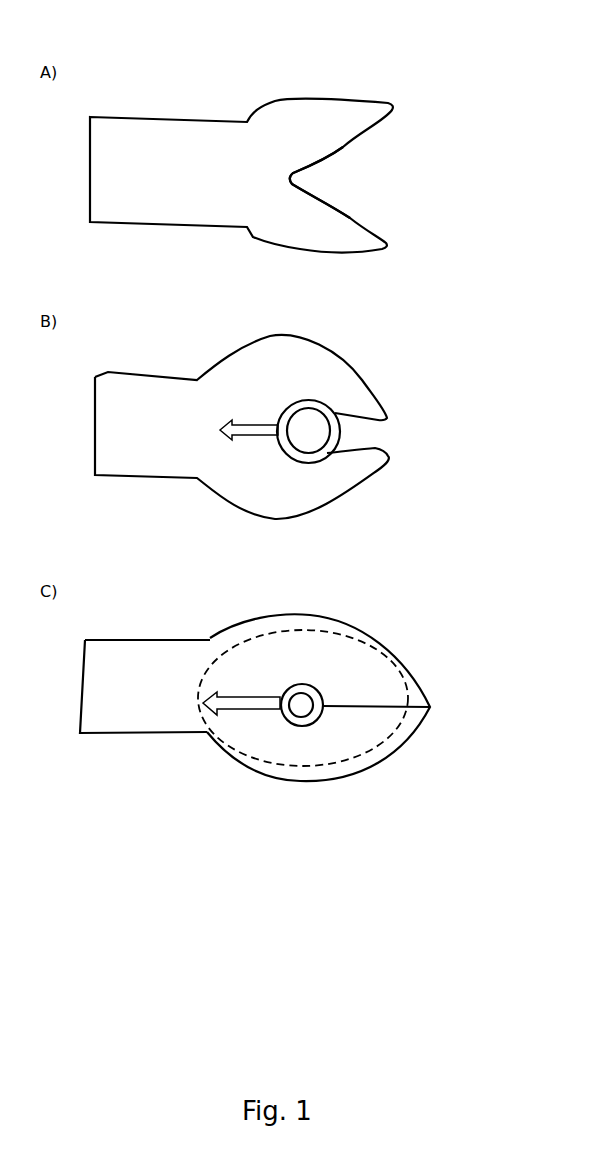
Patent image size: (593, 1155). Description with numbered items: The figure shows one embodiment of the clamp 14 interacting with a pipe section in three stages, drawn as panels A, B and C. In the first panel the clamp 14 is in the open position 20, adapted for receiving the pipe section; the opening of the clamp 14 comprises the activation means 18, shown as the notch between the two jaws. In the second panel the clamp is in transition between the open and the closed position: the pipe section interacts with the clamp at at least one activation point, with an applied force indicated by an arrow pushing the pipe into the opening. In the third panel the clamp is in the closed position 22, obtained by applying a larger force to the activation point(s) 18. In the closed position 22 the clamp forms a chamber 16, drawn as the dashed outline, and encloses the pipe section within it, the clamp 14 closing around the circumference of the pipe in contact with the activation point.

The clamp 14 is at (187, 118).
The chamber 16 is at (393, 733).
The activation means 18 is at (287, 177).
The open position 20 is at (313, 142).
The closed position 22 is at (308, 715).